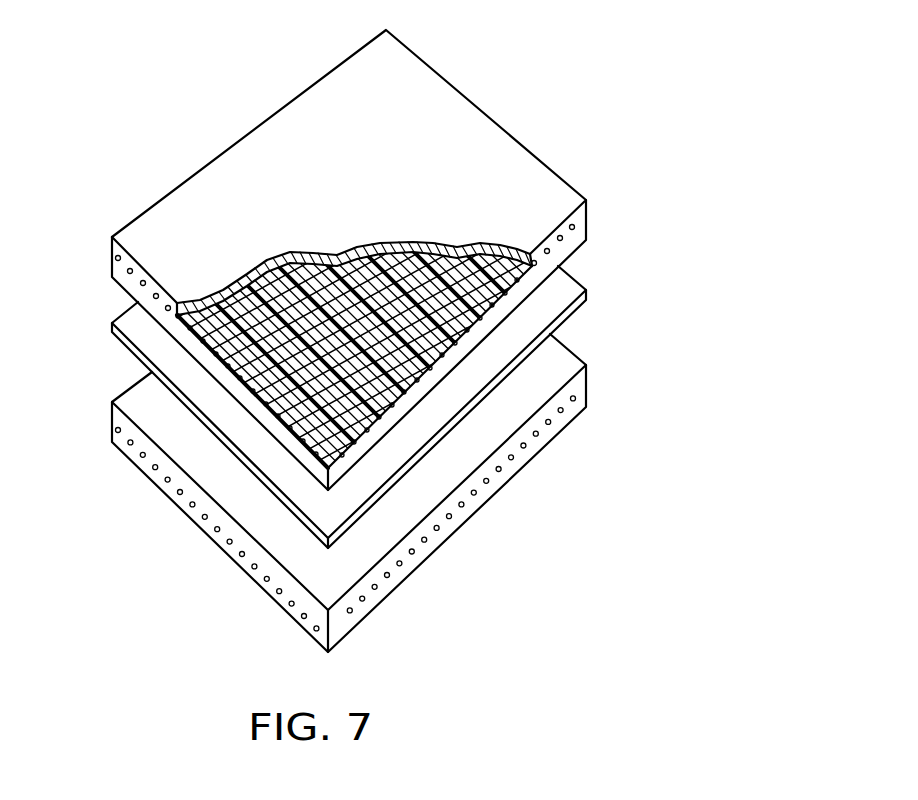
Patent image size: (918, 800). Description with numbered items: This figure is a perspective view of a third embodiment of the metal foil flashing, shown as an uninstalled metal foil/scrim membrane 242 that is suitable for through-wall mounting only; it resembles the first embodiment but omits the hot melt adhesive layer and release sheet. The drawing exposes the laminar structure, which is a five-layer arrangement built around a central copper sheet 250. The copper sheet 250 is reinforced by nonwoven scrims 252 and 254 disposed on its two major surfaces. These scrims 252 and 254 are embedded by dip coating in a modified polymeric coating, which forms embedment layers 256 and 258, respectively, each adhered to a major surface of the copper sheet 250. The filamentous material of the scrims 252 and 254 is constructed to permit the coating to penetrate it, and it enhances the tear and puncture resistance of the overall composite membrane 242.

The metal foil/scrim membrane 242 is at (197, 529).
The copper sheet 250 is at (112, 327).
The nonwoven scrim 252 is at (255, 567).
The nonwoven scrim 254 is at (267, 402).
The embedment layer 256 is at (112, 412).
The embedment layer 258 is at (112, 247).